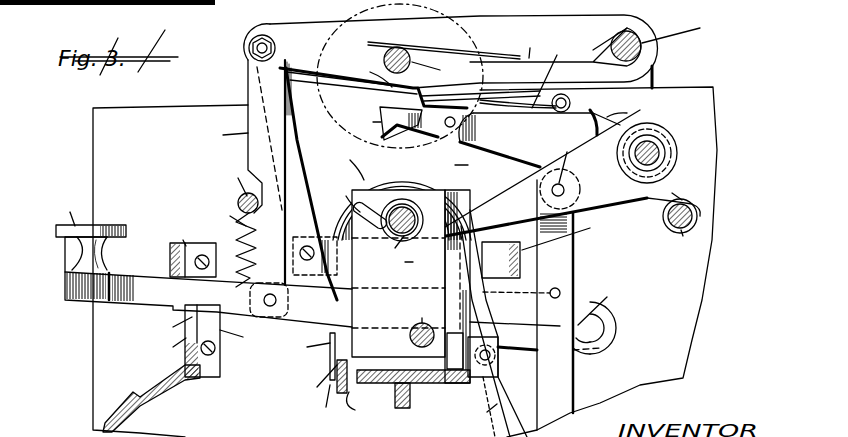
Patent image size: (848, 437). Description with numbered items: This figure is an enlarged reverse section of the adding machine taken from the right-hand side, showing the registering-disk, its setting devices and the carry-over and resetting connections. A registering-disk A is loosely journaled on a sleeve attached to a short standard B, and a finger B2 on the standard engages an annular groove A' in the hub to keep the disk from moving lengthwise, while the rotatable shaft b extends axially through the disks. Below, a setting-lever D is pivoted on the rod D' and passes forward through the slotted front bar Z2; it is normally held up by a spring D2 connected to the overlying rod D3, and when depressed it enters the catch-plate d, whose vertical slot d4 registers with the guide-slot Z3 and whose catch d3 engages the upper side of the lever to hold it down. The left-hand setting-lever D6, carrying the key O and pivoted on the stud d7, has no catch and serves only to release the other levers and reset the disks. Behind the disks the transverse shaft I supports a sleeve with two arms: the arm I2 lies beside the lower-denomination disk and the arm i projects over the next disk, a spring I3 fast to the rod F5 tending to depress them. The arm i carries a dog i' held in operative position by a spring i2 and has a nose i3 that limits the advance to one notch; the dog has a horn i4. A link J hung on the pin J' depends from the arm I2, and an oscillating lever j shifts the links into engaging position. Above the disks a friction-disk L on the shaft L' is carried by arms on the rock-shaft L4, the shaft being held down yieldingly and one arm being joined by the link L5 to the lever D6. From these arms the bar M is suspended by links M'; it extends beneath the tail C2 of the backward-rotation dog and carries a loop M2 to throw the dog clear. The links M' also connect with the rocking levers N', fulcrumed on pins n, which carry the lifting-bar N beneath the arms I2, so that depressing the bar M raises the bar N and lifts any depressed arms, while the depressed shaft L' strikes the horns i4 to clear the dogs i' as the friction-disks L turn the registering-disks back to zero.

The link J is at (405, 262).
The stud d7 is at (599, 299).
The friction-disk L is at (451, 74).
The shaft L' is at (433, 68).
The rock-shaft L4 is at (663, 33).
The link L5 is at (360, 85).
The setting-lever D is at (278, 210).
The spring D2 is at (230, 240).
The rod D3 is at (229, 177).
The setting-lever D6 is at (312, 282).
The shaft or rod D' is at (422, 322).
The arm i is at (415, 98).
The dog i' is at (497, 169).
The spring i2 is at (527, 70).
The nose i3 is at (402, 123).
The horn i4 is at (374, 60).
The transverse shaft I is at (565, 218).
The arm I2 is at (545, 190).
The spring I3 is at (569, 161).
The pin J' is at (567, 157).
The rod F5 is at (680, 226).
The registering-disk A is at (399, 190).
The annular groove A' is at (399, 237).
The shaft b is at (369, 228).
The finger B2 is at (343, 188).
The standard B is at (411, 286).
The pin n is at (417, 264).
The lifting-bar N is at (564, 305).
The rocking lever N' is at (501, 260).
The bar M is at (408, 396).
The link M' is at (316, 380).
The loop M2 is at (316, 380).
The tail C2 is at (305, 350).
The key O is at (88, 230).
The slotted front bar Z2 is at (186, 246).
The guide-slot Z3 is at (151, 385).
The catch-plate d is at (202, 341).
The catch d3 is at (166, 329).
The vertical slot d4 is at (241, 342).
The oscillating lever j is at (498, 323).